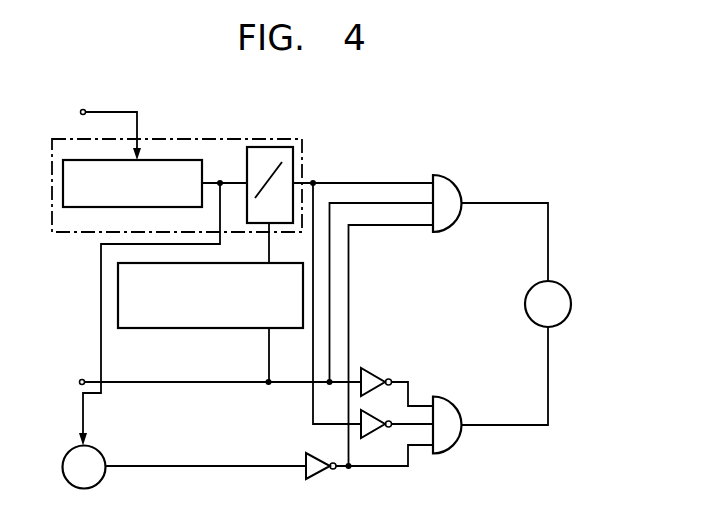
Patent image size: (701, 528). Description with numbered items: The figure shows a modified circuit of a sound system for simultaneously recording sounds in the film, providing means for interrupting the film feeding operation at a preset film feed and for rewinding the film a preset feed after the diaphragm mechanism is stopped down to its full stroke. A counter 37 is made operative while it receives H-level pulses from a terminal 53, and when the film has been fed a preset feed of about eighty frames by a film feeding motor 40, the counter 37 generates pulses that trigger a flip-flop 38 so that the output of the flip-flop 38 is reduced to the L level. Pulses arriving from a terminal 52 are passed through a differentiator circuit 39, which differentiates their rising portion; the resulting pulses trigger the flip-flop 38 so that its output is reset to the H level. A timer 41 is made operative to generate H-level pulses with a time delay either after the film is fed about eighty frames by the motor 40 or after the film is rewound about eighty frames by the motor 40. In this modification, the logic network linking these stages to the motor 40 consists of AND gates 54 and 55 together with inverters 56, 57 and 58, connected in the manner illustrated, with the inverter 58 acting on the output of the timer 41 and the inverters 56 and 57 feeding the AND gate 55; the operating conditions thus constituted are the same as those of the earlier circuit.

The counter 37 is at (181, 161).
The flip-flop 38 is at (279, 150).
The differentiator circuit 39 is at (197, 329).
The film feeding motor 40 is at (562, 290).
The timer 41 is at (105, 477).
The terminal 52 is at (83, 377).
The terminal 53 is at (85, 110).
The AND gate 54 is at (453, 190).
The AND gate 55 is at (452, 403).
The inverter 56 is at (371, 378).
The inverter 57 is at (368, 430).
The inverter 58 is at (314, 475).